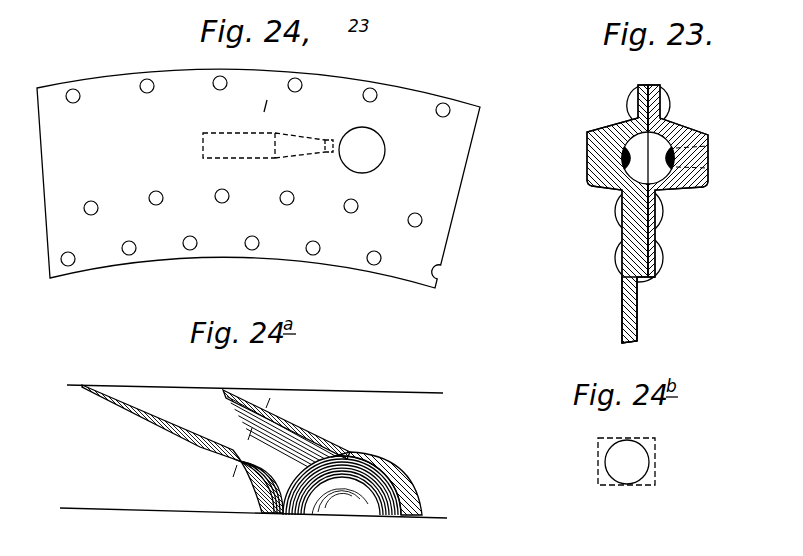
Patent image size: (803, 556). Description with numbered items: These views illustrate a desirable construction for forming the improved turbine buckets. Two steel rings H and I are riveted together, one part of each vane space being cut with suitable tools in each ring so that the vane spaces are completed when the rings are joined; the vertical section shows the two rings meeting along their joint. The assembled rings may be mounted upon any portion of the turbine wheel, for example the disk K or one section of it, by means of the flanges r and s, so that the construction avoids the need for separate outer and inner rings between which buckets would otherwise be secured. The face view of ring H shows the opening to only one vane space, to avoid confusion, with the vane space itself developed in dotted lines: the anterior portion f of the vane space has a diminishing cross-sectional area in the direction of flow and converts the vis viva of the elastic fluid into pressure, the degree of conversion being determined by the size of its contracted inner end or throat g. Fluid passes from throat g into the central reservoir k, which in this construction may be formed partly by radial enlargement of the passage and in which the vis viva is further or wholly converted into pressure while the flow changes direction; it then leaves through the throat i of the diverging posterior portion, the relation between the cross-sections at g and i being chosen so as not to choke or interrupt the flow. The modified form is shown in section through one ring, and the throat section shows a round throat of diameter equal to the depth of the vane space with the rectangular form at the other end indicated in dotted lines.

In FIG. 24, the steel ring H is at (258, 178).
In FIG. 23, the steel ring H is at (678, 181).
In FIG. 23, the steel ring I is at (617, 214).
In FIG. 24, the anterior portion of the vane space f is at (297, 132).
In FIG. 24, the throat g is at (332, 135).
In FIG. 23, the throat g is at (679, 154).
In FIG. 24, the central reservoir k is at (362, 150).
In FIG. 23, the central reservoir k is at (648, 181).
In FIG. 23, the flange r is at (648, 93).
In FIG. 23, the throat i is at (628, 153).
In FIG. 23, the flange s is at (657, 231).
In FIG. 23, the disk K is at (637, 316).